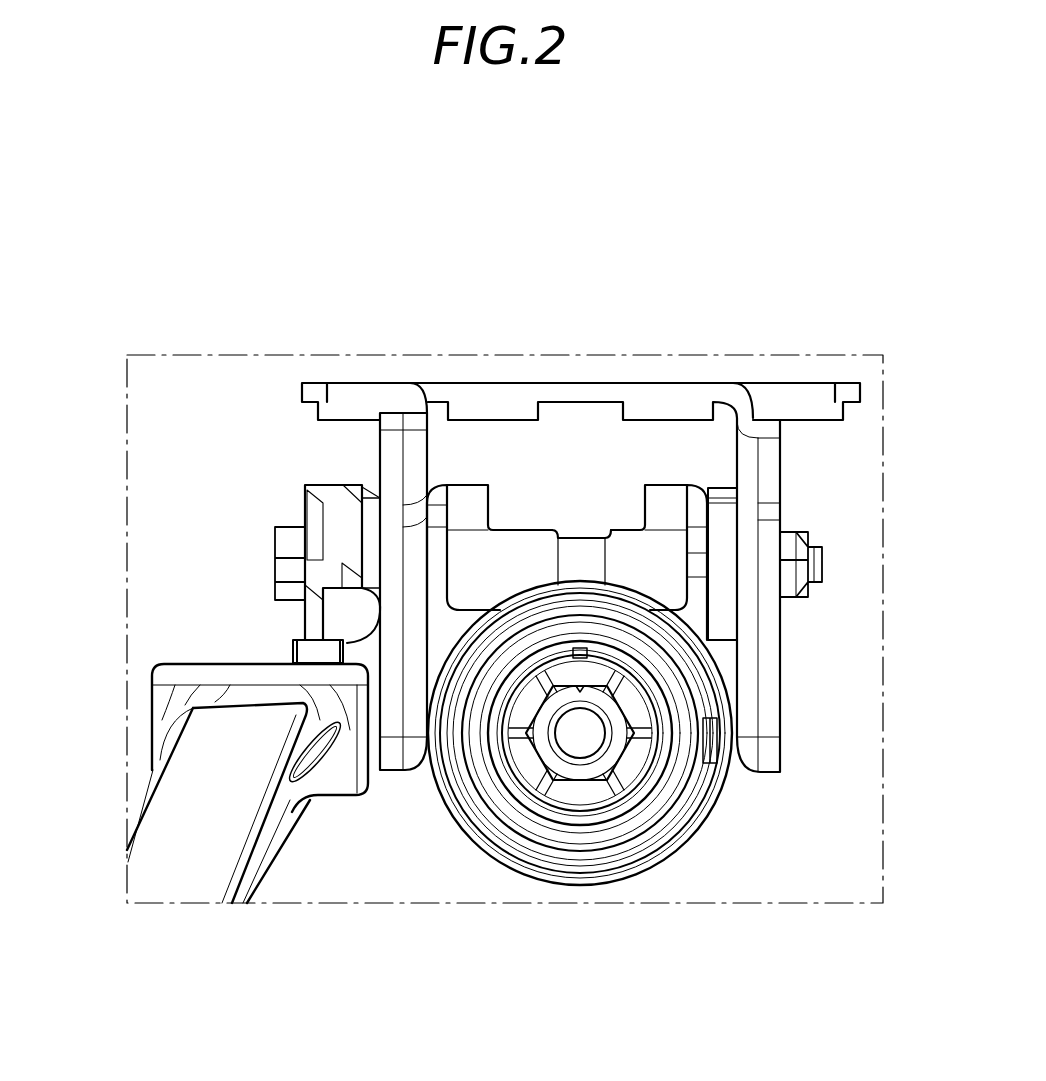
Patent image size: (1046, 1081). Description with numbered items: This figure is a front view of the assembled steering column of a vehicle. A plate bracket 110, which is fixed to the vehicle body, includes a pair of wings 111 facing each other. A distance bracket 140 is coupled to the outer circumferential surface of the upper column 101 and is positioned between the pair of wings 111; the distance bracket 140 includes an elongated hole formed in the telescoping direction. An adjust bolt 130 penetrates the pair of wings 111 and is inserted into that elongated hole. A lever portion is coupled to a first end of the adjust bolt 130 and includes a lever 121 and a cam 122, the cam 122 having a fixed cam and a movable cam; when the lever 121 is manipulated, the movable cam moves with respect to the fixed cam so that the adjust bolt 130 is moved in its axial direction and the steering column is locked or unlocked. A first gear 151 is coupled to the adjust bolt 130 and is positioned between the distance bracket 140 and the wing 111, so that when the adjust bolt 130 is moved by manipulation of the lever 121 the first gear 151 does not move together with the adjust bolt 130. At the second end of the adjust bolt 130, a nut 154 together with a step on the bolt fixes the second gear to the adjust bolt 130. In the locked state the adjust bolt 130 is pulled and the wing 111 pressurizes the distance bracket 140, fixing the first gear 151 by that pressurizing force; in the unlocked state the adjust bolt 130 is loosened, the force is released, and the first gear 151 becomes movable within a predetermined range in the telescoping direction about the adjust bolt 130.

The upper column 101 is at (577, 855).
The plate bracket 110 is at (481, 388).
The wing 111 is at (772, 468).
The lever 121 is at (183, 858).
The cam 122 is at (300, 489).
The adjust bolt 130 is at (582, 553).
The distance bracket 140 is at (527, 553).
The first gear 151 is at (725, 615).
The nut 154 is at (797, 547).